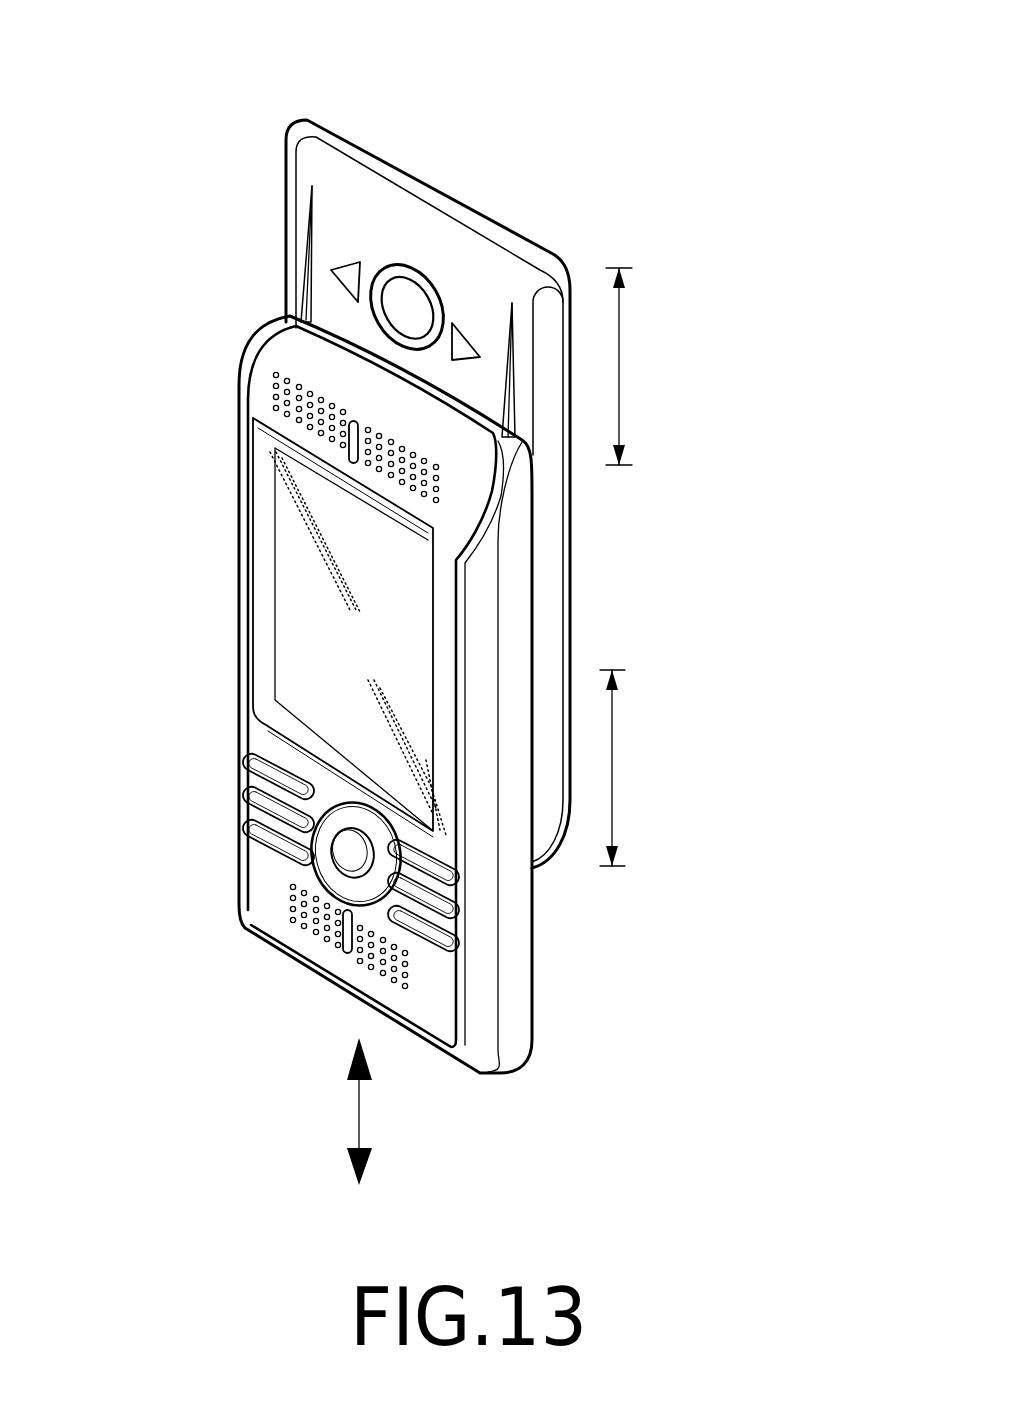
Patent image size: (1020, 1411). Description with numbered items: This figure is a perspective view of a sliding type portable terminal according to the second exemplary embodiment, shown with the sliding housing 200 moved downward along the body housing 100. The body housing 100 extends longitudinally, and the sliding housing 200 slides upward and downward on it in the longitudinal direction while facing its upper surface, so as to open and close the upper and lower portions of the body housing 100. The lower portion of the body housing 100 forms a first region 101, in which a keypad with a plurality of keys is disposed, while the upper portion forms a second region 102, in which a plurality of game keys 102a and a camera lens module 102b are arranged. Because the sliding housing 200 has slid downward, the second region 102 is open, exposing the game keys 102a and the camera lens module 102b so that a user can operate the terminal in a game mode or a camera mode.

The body housing 100 is at (596, 560).
The first region 101 is at (614, 770).
The second region 102 is at (621, 362).
The game keys 102a is at (462, 340).
The camera lens module 102b is at (392, 268).
The sliding housing 200 is at (212, 673).